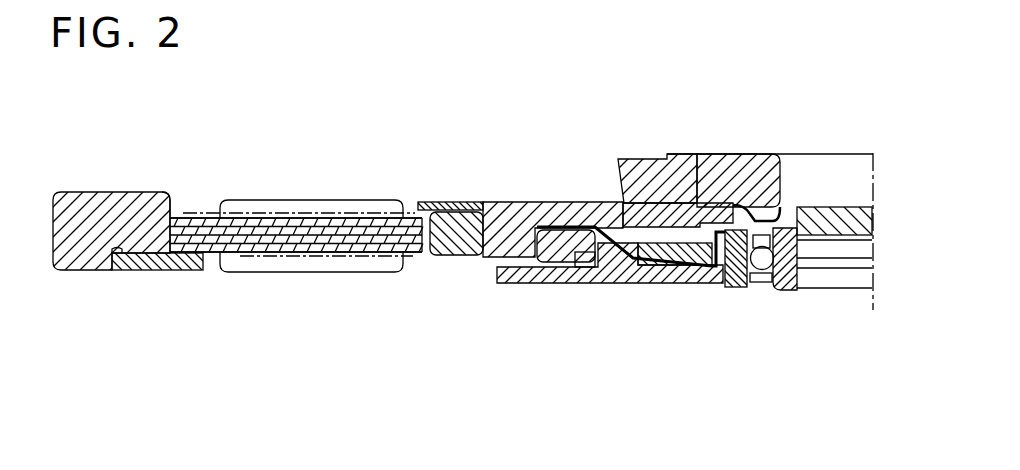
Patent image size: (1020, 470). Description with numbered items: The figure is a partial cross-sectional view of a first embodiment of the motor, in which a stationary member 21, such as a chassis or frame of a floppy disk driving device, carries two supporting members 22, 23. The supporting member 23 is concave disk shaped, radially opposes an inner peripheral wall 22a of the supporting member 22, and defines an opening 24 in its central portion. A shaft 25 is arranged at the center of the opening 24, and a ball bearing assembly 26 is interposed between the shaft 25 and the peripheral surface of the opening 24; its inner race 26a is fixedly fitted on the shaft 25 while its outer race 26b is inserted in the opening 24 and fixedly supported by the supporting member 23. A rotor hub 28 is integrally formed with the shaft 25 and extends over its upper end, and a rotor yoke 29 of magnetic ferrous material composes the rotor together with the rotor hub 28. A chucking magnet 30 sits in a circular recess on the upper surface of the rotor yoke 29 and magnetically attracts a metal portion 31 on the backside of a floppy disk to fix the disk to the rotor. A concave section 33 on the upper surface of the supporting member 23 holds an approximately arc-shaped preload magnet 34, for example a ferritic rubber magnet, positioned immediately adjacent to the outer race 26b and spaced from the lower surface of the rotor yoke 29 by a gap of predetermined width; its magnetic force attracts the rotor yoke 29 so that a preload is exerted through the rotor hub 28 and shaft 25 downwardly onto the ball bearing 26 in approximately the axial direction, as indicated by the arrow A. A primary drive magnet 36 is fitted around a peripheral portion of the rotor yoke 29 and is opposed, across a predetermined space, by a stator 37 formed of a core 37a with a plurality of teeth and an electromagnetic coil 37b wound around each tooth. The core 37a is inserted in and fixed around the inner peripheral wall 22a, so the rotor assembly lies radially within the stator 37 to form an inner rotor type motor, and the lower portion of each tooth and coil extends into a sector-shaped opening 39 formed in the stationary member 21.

The stationary member 21 is at (527, 283).
The supporting member 22 is at (78, 258).
The inner peripheral wall 22a is at (172, 203).
The supporting member 23 is at (612, 275).
The opening 24 is at (727, 290).
The shaft 25 is at (848, 279).
The ball bearing assembly 26 is at (757, 293).
The inner race 26a is at (797, 207).
The outer race 26b is at (698, 200).
The rotor hub 28 is at (833, 208).
The rotor yoke 29 is at (500, 204).
The chucking magnet 30 is at (623, 196).
The metal portion 31 is at (740, 158).
The concave section 33 is at (583, 223).
The preload magnet 34 is at (678, 270).
The primary drive magnet 36 is at (450, 214).
The stator 37 is at (300, 190).
The core 37a is at (253, 210).
The electromagnetic coil 37b is at (347, 210).
The sector-shaped opening 39 is at (205, 266).
The arrow A is at (797, 290).